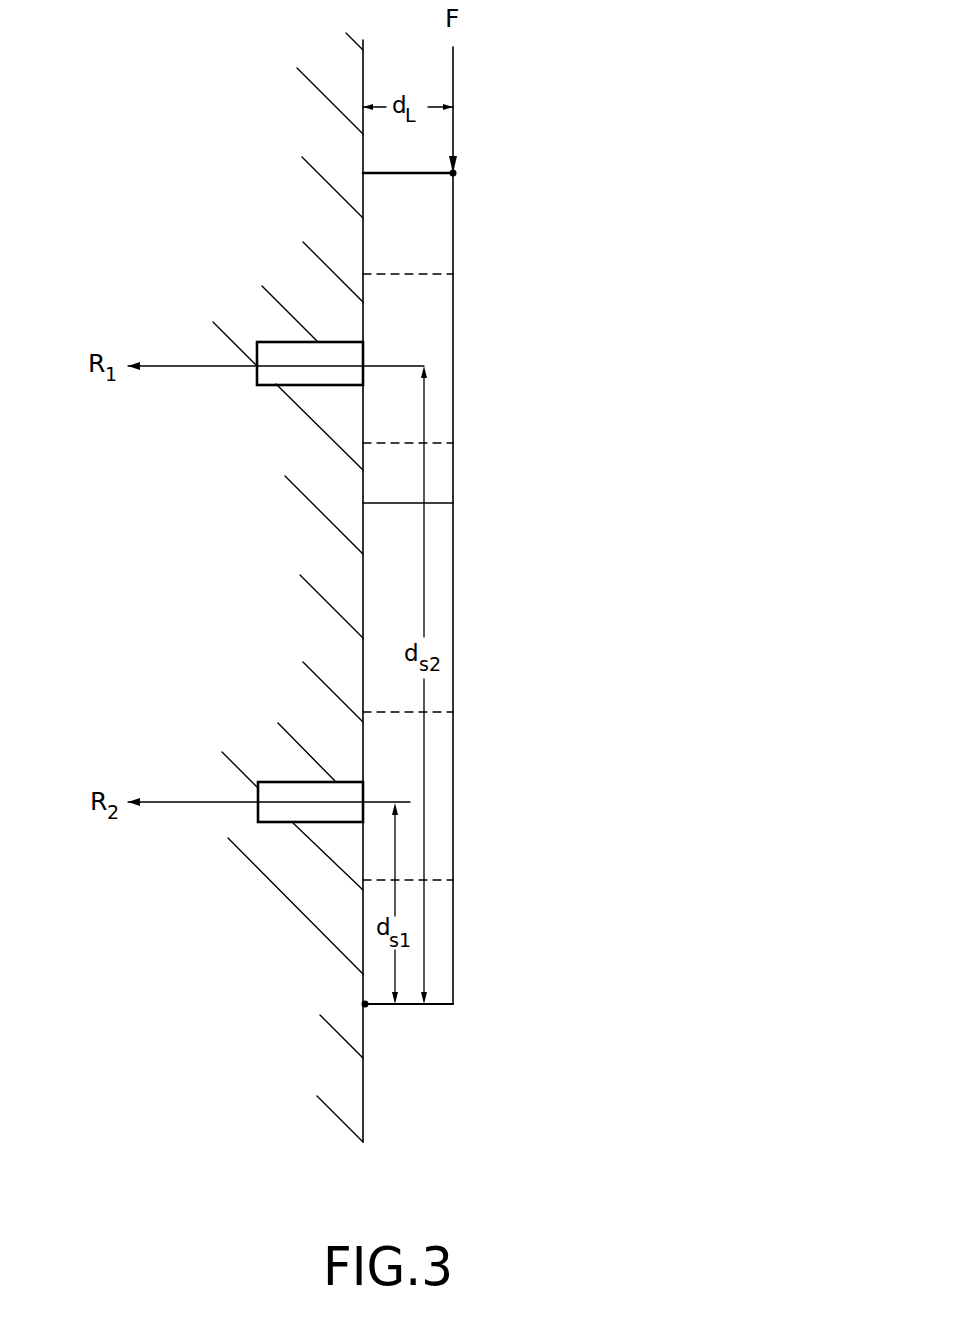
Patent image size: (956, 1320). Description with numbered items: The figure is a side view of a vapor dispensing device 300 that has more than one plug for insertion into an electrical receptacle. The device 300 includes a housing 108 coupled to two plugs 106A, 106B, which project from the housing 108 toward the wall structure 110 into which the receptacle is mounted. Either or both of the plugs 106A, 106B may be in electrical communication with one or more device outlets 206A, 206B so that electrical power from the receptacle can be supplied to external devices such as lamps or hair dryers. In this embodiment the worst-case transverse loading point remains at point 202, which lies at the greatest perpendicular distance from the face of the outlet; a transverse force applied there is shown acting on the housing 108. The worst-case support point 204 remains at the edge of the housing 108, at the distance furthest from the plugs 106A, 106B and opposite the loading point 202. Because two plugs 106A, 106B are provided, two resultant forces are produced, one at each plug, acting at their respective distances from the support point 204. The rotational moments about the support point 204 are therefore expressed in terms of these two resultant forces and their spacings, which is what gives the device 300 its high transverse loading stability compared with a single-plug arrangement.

The support structure (wall) 110 is at (322, 103).
The housing 108 is at (438, 540).
The worst-case transverse loading point 202 is at (453, 173).
The worst-case support point 204 is at (365, 1004).
The device outlet 206A is at (410, 463).
The device outlet 206B is at (413, 817).
The plug 106A is at (273, 372).
The plug 106B is at (278, 812).
The vapor dispensing device 300 is at (672, 327).